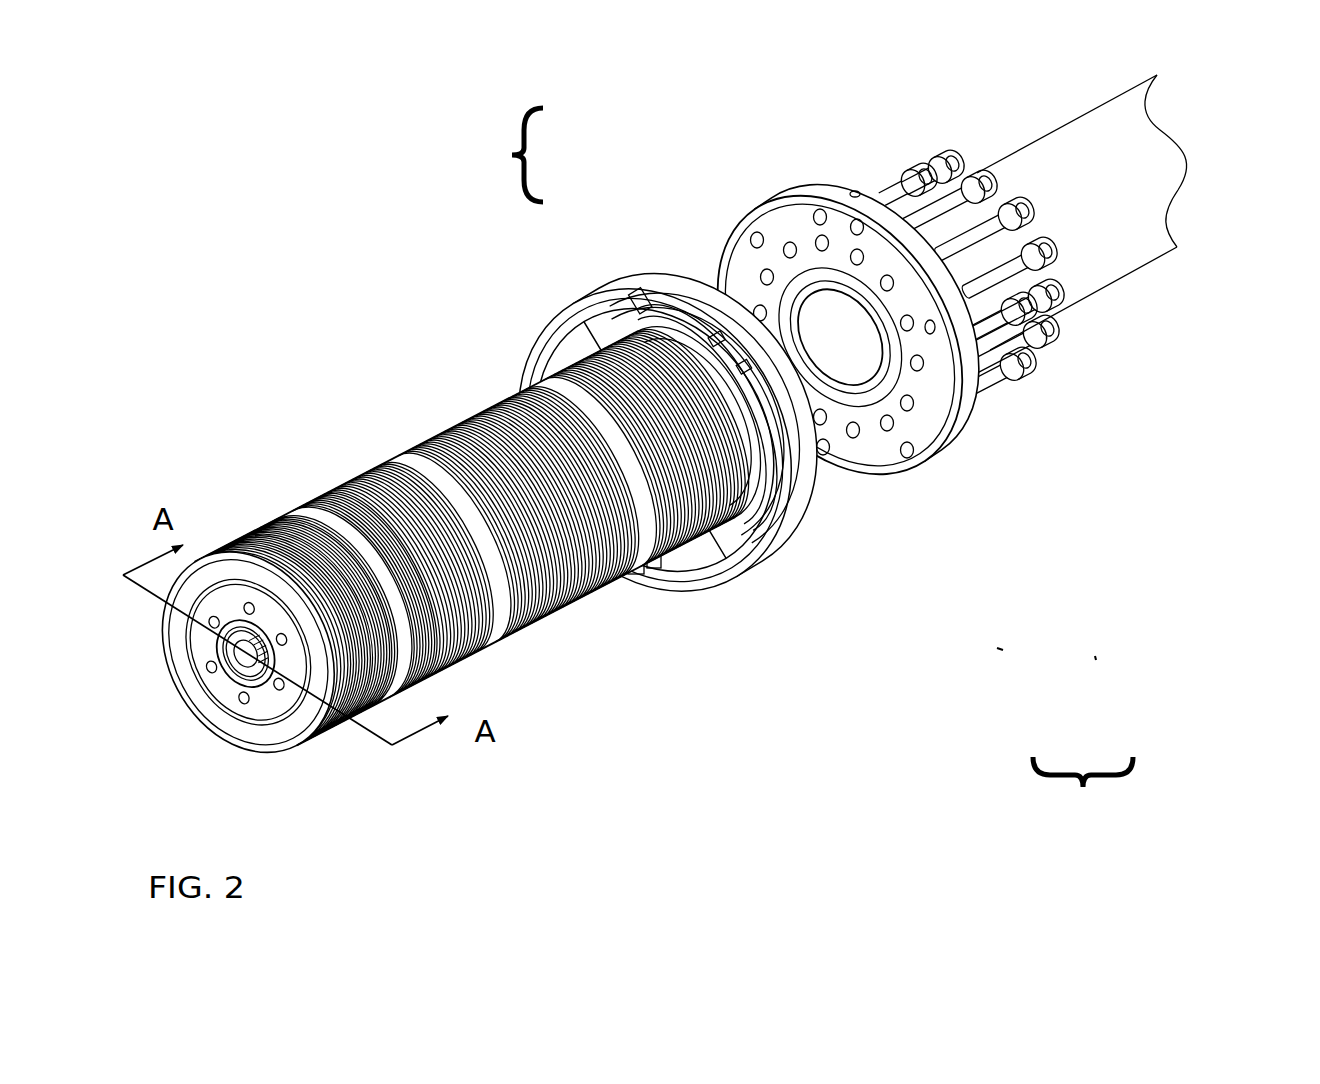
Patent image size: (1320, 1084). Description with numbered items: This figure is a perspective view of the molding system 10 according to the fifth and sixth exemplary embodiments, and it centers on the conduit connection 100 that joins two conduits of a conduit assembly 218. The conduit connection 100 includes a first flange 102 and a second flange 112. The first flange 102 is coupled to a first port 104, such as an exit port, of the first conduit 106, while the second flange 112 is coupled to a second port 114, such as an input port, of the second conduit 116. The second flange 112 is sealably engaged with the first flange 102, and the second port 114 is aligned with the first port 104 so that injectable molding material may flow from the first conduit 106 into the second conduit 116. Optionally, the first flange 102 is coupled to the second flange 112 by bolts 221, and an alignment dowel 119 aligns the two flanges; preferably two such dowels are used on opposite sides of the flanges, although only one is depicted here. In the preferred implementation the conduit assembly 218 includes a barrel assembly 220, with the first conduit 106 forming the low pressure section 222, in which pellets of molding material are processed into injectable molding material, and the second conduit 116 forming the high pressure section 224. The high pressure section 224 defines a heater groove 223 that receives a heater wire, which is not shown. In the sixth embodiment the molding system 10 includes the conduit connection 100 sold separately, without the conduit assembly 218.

The molding system 10 is at (1130, 361).
The conduit connection 100 is at (763, 375).
The first flange 102 is at (816, 368).
The first port 104 is at (820, 350).
The first conduit 106 is at (1095, 658).
The second flange 112 is at (660, 280).
The second port 114 is at (826, 492).
The second conduit 116 is at (1000, 650).
The alignment dowel 119 is at (1045, 300).
The conduit assembly 218 is at (1108, 754).
The barrel assembly 220 is at (1065, 742).
The bolts 221 is at (912, 190).
The low pressure section 222 is at (1122, 290).
The heater groove 223 is at (550, 539).
The high pressure section 224 is at (600, 598).